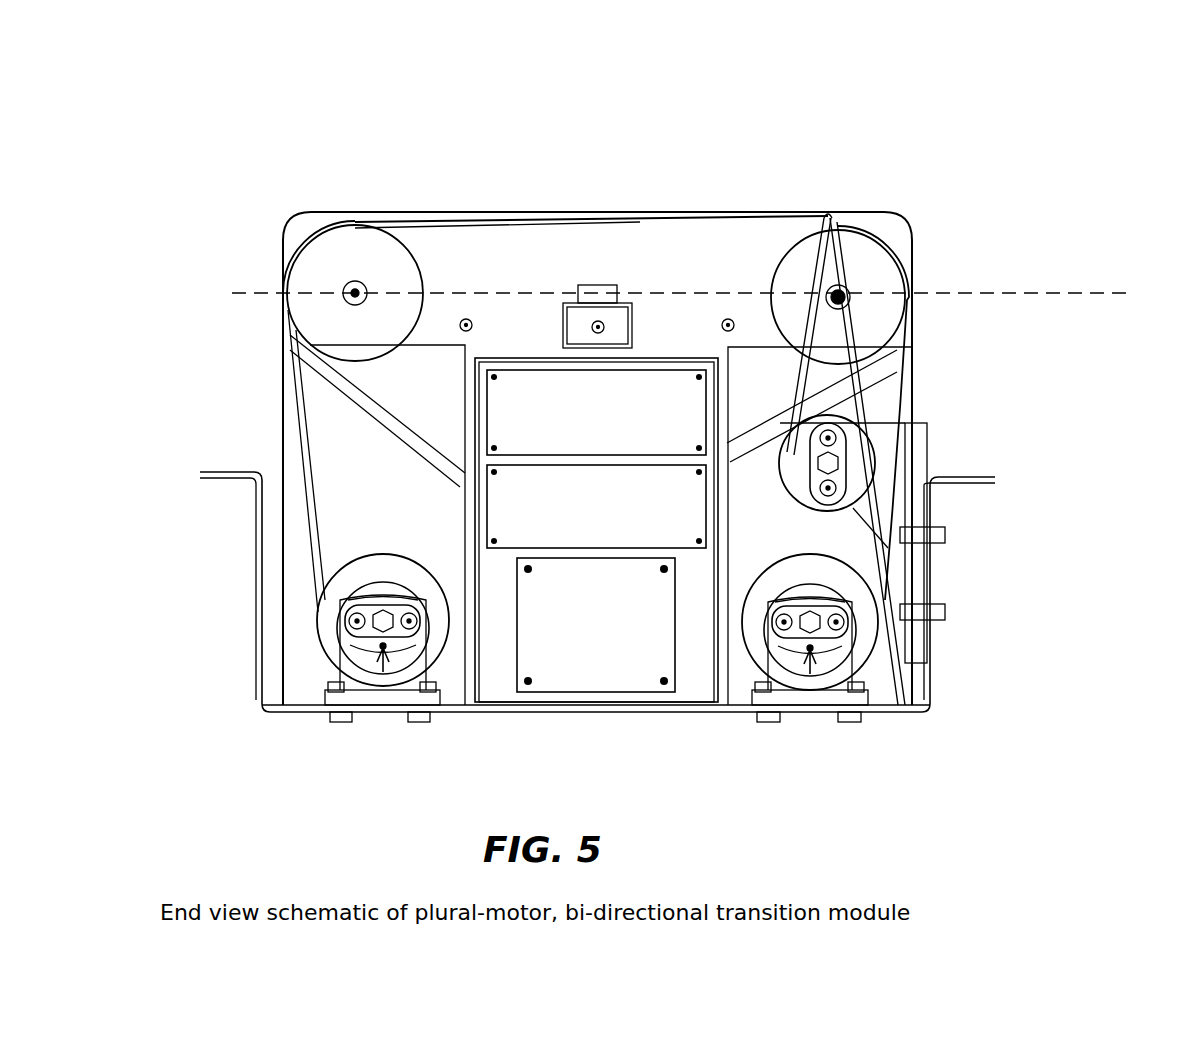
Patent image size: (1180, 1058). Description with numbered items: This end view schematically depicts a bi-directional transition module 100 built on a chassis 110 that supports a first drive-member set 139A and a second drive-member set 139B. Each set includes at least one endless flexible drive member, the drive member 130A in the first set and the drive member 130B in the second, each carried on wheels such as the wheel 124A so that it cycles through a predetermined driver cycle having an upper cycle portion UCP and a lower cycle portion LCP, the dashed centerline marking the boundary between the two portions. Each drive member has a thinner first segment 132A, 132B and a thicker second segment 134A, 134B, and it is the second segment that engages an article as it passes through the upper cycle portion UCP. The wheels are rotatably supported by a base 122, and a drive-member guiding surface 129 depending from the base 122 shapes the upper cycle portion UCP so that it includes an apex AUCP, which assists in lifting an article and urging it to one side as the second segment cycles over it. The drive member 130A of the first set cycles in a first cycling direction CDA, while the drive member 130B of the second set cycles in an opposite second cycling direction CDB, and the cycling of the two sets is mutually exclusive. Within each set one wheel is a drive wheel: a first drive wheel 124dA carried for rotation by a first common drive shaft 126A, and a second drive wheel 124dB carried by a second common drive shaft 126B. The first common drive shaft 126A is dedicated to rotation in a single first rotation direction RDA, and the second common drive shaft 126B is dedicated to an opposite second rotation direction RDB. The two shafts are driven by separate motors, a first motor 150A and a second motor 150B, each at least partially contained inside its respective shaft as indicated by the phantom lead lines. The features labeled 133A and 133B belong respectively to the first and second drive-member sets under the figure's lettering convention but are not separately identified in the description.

The bi-directional transition module 100 is at (932, 210).
The chassis 110 is at (930, 690).
The base 122 is at (440, 255).
The drive-member guiding surface 129 is at (476, 232).
The wheel 124A is at (327, 268).
The first segment 132A is at (305, 245).
The first drive-member set 139A is at (288, 345).
The flexible drive member 130A is at (288, 367).
The first side wall 133A is at (287, 397).
The second segment 134A is at (290, 457).
The drive wheel 124dA is at (335, 605).
The first common drive shaft 126A is at (375, 650).
The motor 150A is at (383, 648).
The first segment 132B is at (875, 240).
The second side wall 133B is at (908, 310).
The second drive-member set 139B is at (832, 380).
The second segment 134B is at (755, 437).
The flexible drive member 130B is at (767, 443).
The drive wheel 124dB is at (860, 650).
The second common drive shaft 126B is at (832, 655).
The motor 150B is at (810, 650).
The upper cycle portion UCP is at (1119, 252).
The lower cycle portion LCP is at (1124, 330).
The apex AUCP is at (570, 225).
The first cycling direction CDA is at (318, 428).
The second cycling direction CDB is at (347, 415).
The first rotation direction RDA is at (358, 537).
The second rotation direction RDB is at (840, 543).